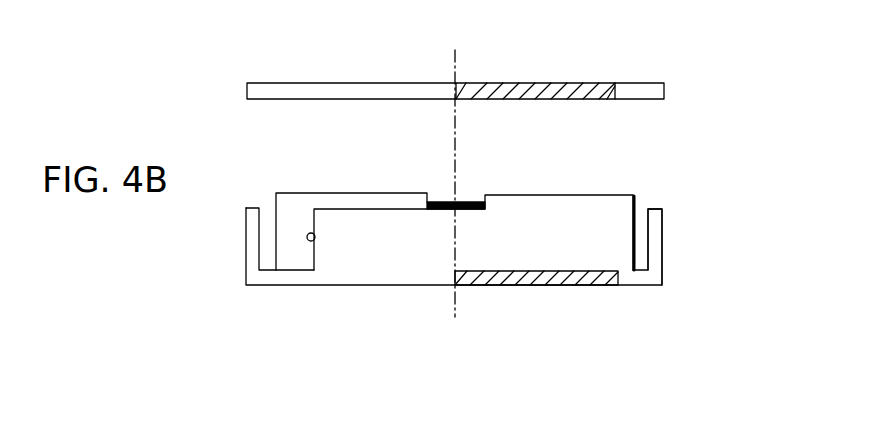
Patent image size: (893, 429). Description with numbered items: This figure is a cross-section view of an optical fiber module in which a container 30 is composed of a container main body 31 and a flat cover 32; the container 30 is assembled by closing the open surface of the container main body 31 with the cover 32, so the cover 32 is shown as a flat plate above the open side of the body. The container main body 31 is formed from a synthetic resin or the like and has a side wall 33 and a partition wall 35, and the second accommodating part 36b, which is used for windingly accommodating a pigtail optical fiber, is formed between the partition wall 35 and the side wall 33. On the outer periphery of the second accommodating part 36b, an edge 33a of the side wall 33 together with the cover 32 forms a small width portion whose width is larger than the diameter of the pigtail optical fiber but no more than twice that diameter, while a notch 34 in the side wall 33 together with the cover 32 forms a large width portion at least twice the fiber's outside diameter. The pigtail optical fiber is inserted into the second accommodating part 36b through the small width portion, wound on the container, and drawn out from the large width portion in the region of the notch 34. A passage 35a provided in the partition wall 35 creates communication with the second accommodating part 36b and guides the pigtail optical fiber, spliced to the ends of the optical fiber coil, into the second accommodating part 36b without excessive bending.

The container 30 is at (688, 117).
The container main body 31 is at (513, 285).
The cover 32 is at (533, 82).
The side wall 33 is at (387, 260).
The edge of the side wall 33a is at (653, 205).
The notch 34 is at (315, 236).
The partition wall 35 is at (568, 257).
The passage 35a is at (468, 200).
The second accommodating part 36b is at (640, 227).